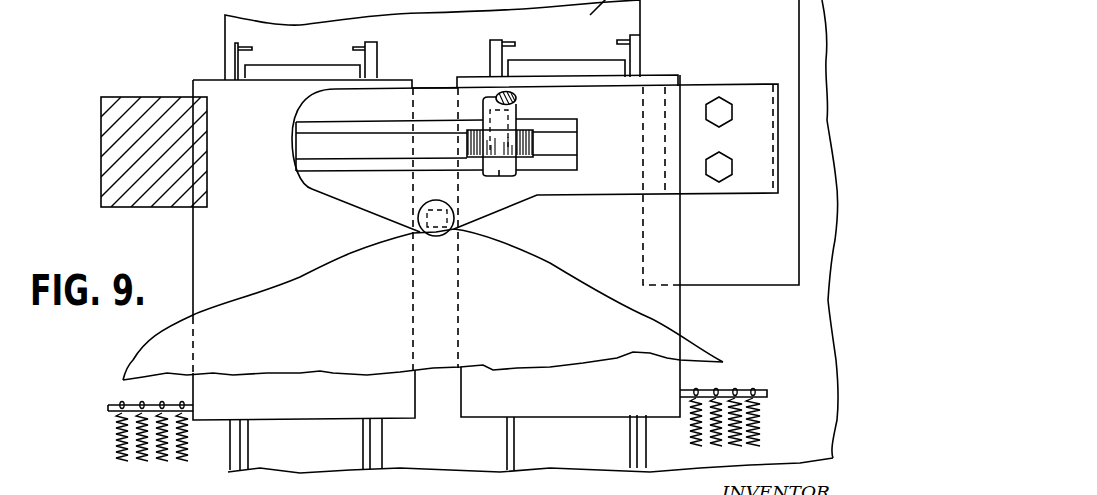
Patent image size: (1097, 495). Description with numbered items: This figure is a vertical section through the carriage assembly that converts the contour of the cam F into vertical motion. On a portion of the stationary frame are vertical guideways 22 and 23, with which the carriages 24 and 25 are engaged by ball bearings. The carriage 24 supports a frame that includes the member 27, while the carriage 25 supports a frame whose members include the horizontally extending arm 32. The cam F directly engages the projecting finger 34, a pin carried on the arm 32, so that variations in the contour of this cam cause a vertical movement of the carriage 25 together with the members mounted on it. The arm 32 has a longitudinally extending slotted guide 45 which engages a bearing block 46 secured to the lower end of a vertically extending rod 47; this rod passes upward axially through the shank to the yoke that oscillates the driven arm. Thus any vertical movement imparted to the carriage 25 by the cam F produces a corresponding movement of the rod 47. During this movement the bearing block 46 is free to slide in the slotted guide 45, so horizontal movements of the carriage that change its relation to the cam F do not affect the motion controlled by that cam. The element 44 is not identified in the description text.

The vertical guideway 22 is at (280, 70).
The vertical guideway 23 is at (545, 67).
The carriage 24 is at (217, 243).
The carriage 25 is at (660, 80).
The frame member 27 is at (118, 150).
The arm 32 is at (600, 183).
The projecting finger 34 is at (453, 212).
The plate 44 is at (432, 40).
The slotted guide 45 is at (565, 123).
The bearing block 46 is at (515, 137).
The rod 47 is at (508, 112).
The cam F is at (530, 270).